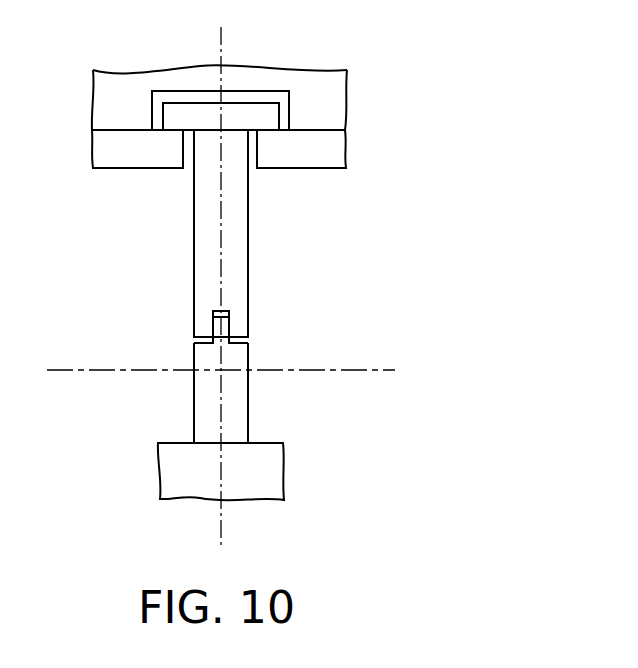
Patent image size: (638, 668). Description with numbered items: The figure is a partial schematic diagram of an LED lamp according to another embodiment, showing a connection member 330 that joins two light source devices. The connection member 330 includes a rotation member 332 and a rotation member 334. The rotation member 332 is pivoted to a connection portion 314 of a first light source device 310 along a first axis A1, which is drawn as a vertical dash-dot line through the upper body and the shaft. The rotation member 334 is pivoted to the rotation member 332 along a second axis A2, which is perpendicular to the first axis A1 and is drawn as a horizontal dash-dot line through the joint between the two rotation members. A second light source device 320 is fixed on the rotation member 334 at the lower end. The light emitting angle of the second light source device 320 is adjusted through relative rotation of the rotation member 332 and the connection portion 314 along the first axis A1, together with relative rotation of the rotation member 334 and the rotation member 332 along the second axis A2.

The first light source device 310 is at (339, 106).
The connection portion 314 is at (337, 156).
The second light source device 320 is at (268, 478).
The connection member 330 is at (528, 223).
The rotation member 332 is at (237, 231).
The rotation member 334 is at (237, 398).
The first axis A1 is at (221, 35).
The second axis A2 is at (378, 370).